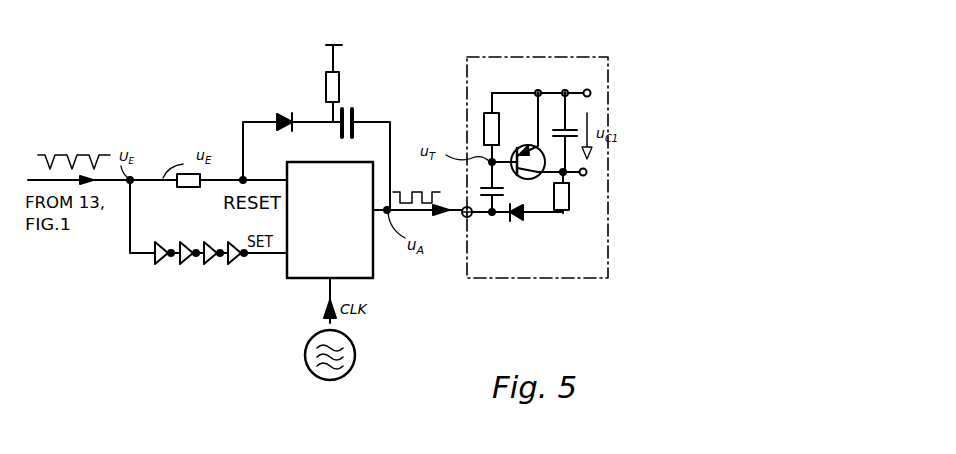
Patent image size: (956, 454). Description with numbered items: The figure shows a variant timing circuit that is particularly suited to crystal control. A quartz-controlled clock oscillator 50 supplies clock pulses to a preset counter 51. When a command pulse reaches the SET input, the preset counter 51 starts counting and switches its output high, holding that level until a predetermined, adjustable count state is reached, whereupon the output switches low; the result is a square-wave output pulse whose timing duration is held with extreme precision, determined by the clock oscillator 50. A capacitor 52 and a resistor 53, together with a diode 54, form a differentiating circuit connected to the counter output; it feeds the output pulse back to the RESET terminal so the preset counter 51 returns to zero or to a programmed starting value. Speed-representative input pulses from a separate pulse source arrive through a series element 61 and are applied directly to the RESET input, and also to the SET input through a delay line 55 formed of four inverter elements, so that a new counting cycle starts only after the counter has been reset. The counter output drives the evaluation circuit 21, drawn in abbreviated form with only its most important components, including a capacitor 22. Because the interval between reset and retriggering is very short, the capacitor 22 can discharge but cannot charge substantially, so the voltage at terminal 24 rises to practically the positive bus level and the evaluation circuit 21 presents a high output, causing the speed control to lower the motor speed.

The evaluation circuit 21 is at (524, 274).
The capacitor 22 is at (560, 130).
The terminal 24 is at (587, 173).
The clock oscillator 50 is at (305, 357).
The preset counter 51 is at (320, 260).
The capacitor 52 is at (360, 112).
The resistor 53 is at (327, 80).
The diode 54 is at (285, 116).
The delay line 55 is at (248, 268).
The resistor 61 is at (184, 190).